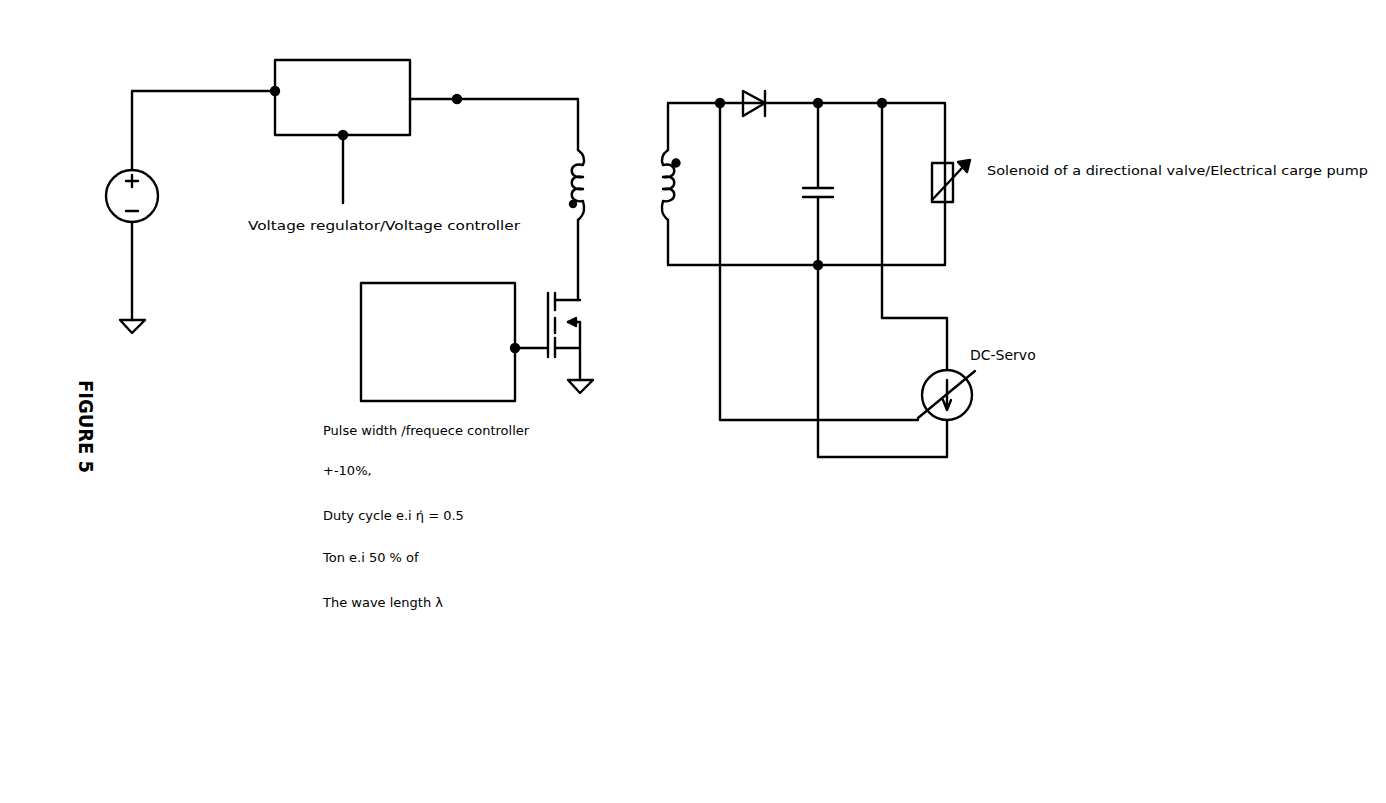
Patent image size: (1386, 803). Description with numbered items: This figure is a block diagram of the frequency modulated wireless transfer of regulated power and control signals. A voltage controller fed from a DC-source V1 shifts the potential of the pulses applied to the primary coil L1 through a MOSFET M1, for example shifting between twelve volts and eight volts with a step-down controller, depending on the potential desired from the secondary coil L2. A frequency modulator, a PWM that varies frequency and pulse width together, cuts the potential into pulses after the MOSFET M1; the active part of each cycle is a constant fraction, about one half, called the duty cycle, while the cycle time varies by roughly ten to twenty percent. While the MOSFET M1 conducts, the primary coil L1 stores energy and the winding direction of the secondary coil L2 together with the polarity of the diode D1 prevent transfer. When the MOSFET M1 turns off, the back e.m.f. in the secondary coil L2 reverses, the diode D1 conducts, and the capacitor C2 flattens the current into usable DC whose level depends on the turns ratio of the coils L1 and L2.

The DC-source V1 is at (190, 212).
The primary coil L1 is at (591, 185).
The secondary coil L2 is at (646, 185).
The MOSFET M1 is at (590, 343).
The diode D1 is at (751, 107).
The capacitor C2 is at (823, 184).